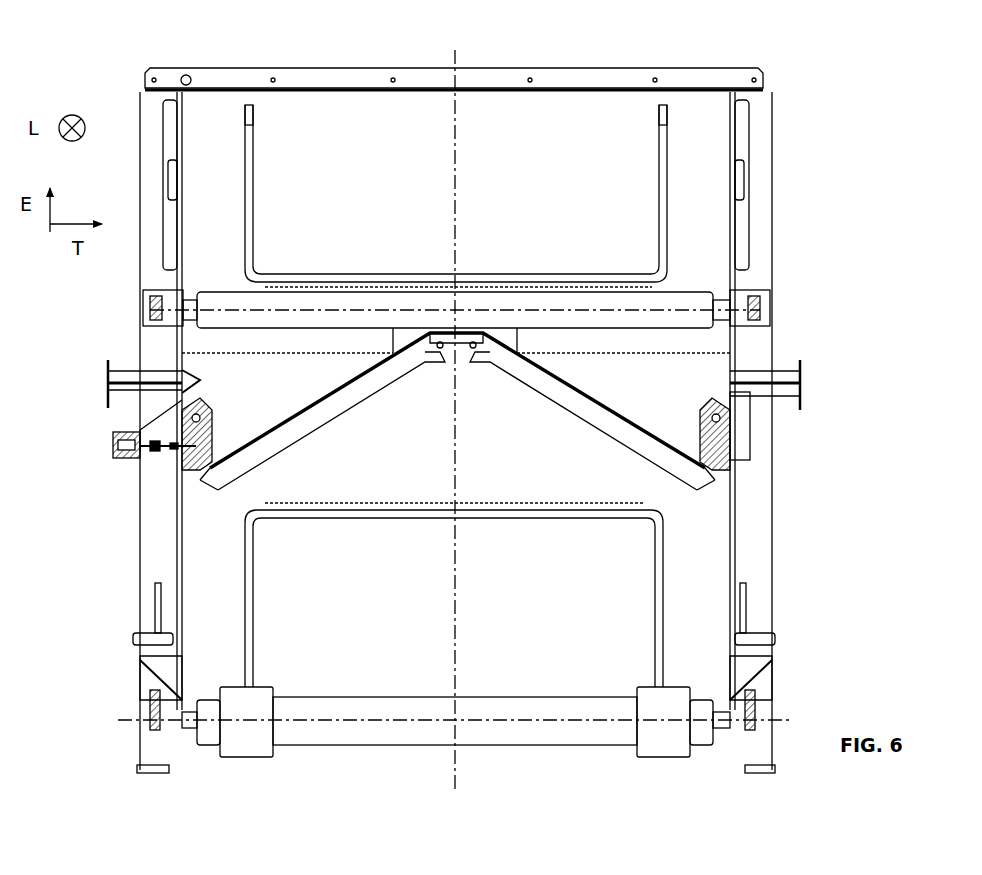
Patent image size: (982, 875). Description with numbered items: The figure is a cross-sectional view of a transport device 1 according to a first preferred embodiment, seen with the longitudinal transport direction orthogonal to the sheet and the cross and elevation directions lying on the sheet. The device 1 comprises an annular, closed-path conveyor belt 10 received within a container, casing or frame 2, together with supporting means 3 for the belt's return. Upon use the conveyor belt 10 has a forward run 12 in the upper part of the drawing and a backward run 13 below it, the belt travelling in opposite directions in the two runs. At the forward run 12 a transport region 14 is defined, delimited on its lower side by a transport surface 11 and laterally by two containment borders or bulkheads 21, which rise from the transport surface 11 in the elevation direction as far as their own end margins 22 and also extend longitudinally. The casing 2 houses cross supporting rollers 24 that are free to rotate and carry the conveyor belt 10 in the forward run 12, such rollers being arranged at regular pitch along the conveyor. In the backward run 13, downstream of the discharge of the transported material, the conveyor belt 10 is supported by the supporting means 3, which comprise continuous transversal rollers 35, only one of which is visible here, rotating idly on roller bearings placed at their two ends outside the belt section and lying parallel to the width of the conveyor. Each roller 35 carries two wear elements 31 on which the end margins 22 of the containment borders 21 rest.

The transport device 1 is at (791, 124).
The casing or frame 2 is at (124, 496).
The supporting means 3 is at (231, 759).
The conveyor belt 10 is at (684, 180).
The transport surface 11 is at (498, 262).
The forward run 12 is at (782, 95).
The backward run 13 is at (800, 478).
The transport region 14 is at (395, 207).
The containment borders 21 is at (260, 165).
The end margin 22 is at (248, 103).
The cross supporting rollers 24 is at (605, 321).
The wear elements 31 is at (256, 691).
The transversal rollers 35 is at (387, 744).